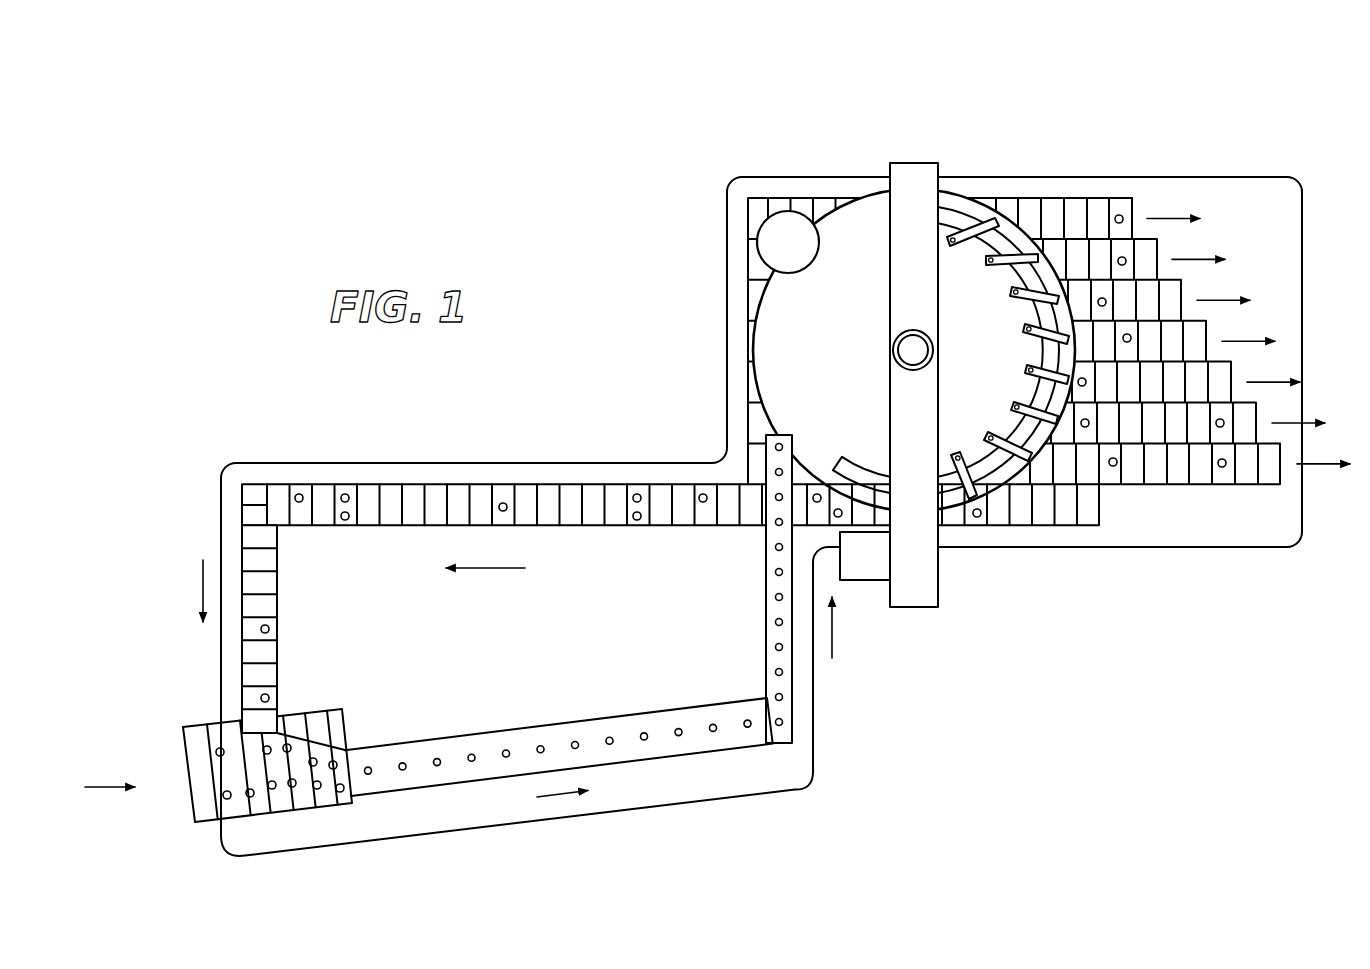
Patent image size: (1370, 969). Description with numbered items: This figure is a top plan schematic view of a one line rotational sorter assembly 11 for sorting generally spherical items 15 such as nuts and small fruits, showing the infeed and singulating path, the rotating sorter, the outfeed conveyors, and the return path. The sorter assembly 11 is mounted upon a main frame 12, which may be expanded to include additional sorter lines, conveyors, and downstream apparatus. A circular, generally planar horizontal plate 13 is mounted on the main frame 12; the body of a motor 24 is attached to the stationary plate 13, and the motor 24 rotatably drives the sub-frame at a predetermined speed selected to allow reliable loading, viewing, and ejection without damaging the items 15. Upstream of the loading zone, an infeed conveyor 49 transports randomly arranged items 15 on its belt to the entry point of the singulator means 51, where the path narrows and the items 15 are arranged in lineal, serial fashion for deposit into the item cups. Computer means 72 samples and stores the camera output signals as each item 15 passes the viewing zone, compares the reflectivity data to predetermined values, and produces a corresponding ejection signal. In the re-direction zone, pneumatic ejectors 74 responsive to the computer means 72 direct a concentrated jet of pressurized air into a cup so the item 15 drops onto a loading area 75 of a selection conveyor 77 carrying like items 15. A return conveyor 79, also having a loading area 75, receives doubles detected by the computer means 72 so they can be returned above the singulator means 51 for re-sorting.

The rotational sorter assembly 11 is at (1233, 86).
The main frame 12 is at (1217, 174).
The horizontal plate 13 is at (794, 311).
The items 15 is at (502, 503).
The motor 24 is at (916, 352).
The infeed conveyor 49 is at (253, 813).
The singulator means 51 is at (761, 563).
The computer means 72 is at (857, 585).
The pneumatic ejectors 74 is at (1004, 226).
The loading area 75 is at (962, 185).
The selection conveyor 77 is at (1083, 278).
The return conveyor 79 is at (386, 483).